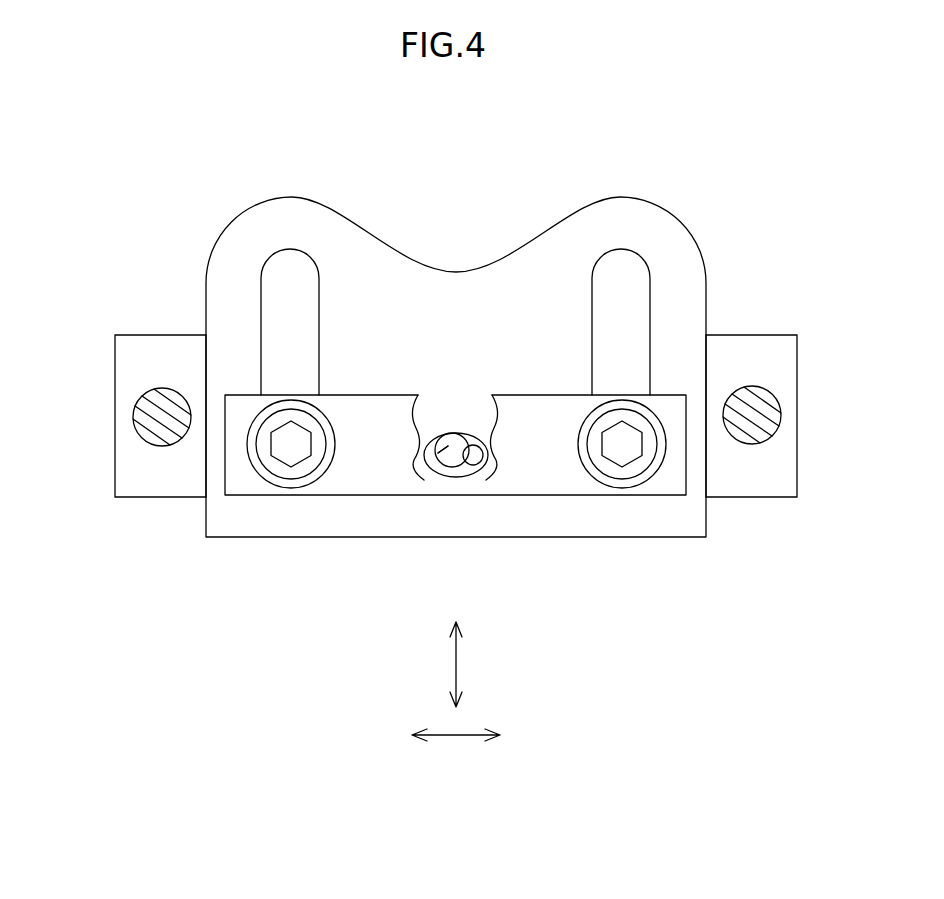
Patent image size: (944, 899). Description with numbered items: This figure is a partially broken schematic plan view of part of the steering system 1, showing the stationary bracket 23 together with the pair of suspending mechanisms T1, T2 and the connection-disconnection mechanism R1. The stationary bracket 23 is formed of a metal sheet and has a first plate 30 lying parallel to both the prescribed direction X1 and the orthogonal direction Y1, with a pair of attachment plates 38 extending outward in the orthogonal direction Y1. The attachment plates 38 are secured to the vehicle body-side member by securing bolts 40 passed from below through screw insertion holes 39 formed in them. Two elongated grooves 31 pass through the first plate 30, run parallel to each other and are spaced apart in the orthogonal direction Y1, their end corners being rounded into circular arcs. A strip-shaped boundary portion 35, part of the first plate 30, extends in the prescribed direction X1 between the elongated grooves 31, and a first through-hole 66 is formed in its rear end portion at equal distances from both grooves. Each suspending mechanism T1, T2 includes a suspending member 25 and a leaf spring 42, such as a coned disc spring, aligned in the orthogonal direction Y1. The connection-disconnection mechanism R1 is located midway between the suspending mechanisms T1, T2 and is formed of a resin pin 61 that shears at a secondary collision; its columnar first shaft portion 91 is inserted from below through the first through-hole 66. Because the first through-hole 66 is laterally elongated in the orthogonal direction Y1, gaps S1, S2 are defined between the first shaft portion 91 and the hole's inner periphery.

The steering system 1 is at (712, 168).
The stationary bracket 23 is at (718, 308).
The suspending member 25 is at (278, 484).
The first plate 30 is at (438, 288).
The elongated grooves 31 is at (290, 265).
The boundary portion 35 is at (397, 308).
The attachment plates 38 is at (127, 363).
The screw insertion holes 39 is at (140, 421).
The securing bolts 40 is at (162, 433).
The leaf spring 42 is at (262, 479).
The pin 61 is at (438, 452).
The first through-hole 66 is at (463, 468).
The first shaft portion 91 is at (414, 528).
The connection-disconnection mechanism R1 is at (457, 479).
The gap S1 is at (435, 447).
The gap S2 is at (476, 447).
The suspending mechanism T1 is at (329, 492).
The suspending mechanism T2 is at (582, 492).
The prescribed direction X1 is at (458, 660).
The orthogonal direction Y1 is at (456, 738).